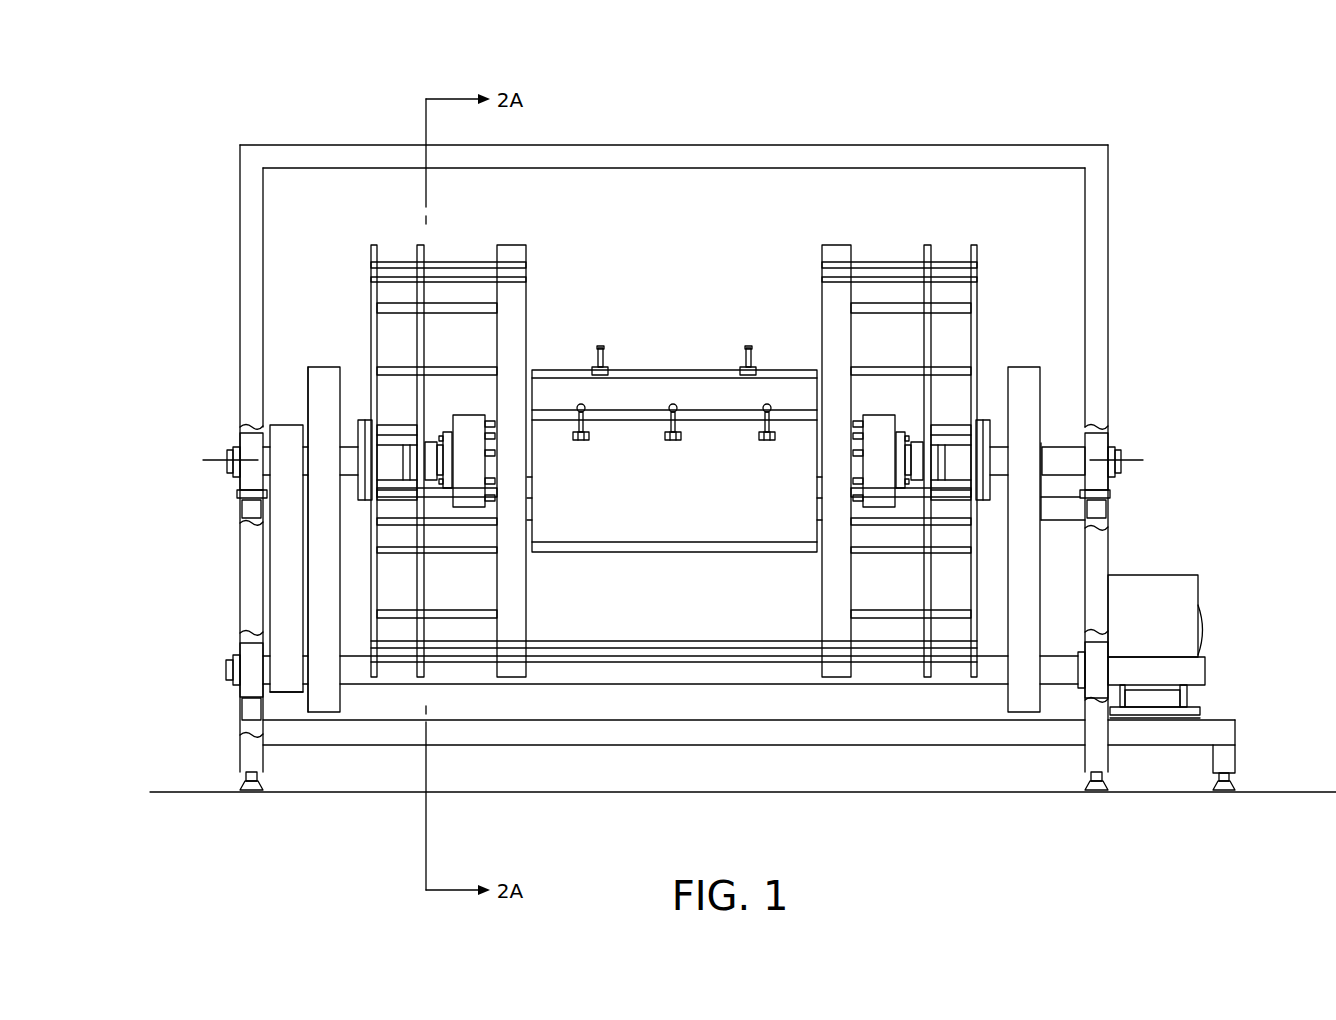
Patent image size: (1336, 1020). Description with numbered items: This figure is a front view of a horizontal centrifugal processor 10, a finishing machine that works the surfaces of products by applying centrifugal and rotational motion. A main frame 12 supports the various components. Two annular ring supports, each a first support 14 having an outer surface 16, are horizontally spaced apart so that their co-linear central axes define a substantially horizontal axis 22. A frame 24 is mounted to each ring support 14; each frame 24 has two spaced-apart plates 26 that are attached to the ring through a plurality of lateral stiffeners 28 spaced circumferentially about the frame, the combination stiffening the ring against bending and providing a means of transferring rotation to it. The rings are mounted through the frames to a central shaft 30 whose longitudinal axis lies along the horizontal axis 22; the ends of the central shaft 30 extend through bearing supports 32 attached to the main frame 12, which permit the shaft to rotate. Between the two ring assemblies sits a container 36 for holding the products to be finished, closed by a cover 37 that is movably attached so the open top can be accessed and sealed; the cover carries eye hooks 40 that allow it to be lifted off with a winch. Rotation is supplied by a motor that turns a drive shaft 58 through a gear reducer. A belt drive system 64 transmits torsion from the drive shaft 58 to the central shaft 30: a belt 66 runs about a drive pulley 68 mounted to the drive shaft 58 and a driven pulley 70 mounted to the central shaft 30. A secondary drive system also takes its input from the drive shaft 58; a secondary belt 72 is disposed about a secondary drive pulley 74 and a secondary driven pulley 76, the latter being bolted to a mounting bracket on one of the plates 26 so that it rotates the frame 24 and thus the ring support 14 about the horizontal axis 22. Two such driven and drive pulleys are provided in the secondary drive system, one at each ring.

The horizontal centrifugal processor 10 is at (1170, 194).
The main frame 12 is at (1112, 380).
The first support 14 is at (510, 232).
The outer surface 16 is at (510, 336).
The horizontal axis 22 is at (205, 458).
The frame 24 is at (400, 250).
The plates 26 is at (420, 322).
The lateral stiffeners 28 is at (890, 285).
The central shaft 30 is at (1062, 443).
The bearing supports 32 is at (253, 440).
The container 36 is at (701, 405).
The cover 37 is at (653, 368).
The eye hooks 40 is at (752, 360).
The drive shaft 58 is at (648, 673).
The belt drive system 64 is at (258, 561).
The belt 66 is at (287, 612).
The drive pulley 68 is at (267, 672).
The driven pulley 70 is at (266, 427).
The secondary belt 72 is at (326, 594).
The secondary drive pulley 74 is at (303, 700).
The secondary driven pulley 76 is at (306, 393).